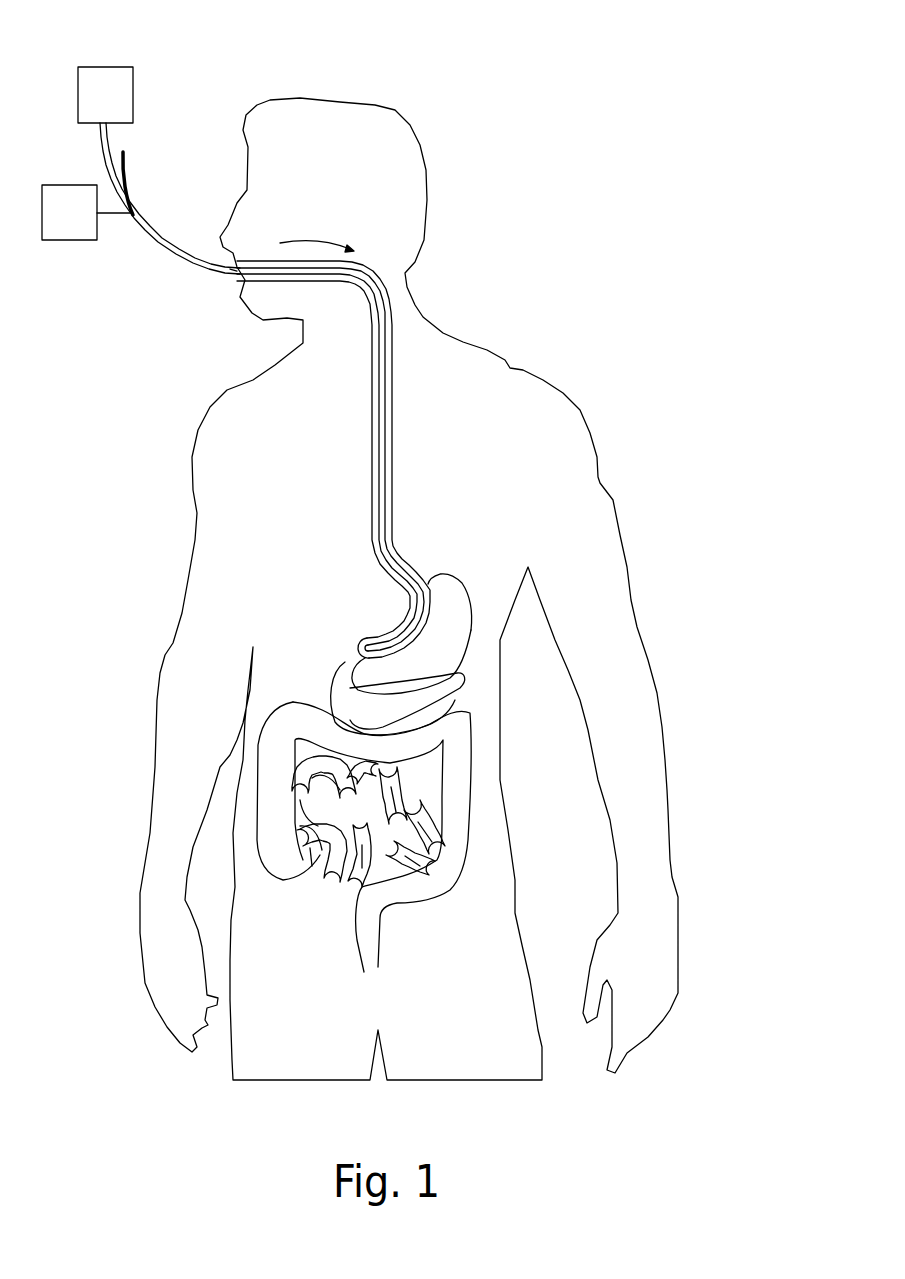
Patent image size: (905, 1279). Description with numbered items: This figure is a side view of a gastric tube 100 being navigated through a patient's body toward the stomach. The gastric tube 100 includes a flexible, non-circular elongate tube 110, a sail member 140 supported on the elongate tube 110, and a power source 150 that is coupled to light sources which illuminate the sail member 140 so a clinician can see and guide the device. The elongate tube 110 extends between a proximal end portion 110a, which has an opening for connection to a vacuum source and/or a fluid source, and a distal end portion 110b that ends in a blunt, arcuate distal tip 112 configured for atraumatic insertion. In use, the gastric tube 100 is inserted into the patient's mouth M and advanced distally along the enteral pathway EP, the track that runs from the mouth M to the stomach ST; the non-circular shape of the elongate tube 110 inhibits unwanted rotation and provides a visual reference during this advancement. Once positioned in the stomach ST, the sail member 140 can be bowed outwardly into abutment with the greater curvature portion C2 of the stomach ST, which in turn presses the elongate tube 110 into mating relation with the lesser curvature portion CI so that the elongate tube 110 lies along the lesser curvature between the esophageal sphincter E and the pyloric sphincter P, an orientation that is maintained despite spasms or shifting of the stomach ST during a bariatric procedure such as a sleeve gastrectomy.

The gastric tube 100 is at (141, 188).
The elongate tube 110 is at (422, 633).
The proximal end portion 110a is at (192, 263).
The distal end portion 110b is at (395, 640).
The distal tip 112 is at (358, 650).
The sail member 140 is at (130, 187).
The power source 150 is at (105, 67).
The mouth M is at (243, 277).
The enteral pathway EP is at (317, 228).
The esophageal sphincter E is at (442, 575).
The stomach ST is at (527, 562).
The greater curvature portion C2 is at (452, 607).
The lesser curvature portion CI is at (410, 617).
The pyloric sphincter P is at (360, 678).